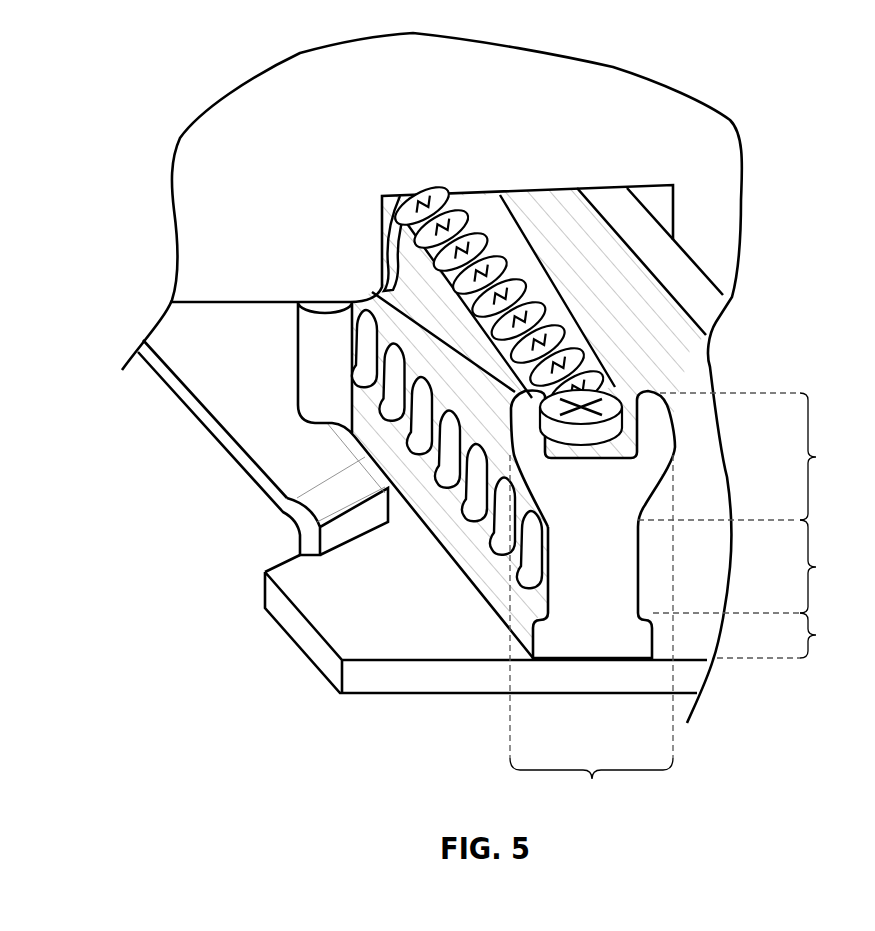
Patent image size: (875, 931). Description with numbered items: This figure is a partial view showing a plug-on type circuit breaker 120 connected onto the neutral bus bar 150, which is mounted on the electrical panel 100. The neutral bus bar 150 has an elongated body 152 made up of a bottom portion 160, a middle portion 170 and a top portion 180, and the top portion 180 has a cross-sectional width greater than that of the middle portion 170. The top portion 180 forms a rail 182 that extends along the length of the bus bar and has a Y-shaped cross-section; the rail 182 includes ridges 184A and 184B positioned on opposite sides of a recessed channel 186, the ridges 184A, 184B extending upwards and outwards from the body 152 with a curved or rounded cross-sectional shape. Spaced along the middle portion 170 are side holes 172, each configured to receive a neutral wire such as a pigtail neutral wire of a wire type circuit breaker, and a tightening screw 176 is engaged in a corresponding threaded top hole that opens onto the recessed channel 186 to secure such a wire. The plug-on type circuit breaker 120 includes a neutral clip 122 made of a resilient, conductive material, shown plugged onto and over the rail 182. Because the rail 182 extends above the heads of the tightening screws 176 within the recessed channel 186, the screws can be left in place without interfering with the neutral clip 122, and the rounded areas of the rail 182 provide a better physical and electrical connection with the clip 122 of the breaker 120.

The electrical panel 100 is at (302, 648).
The plug-on type circuit breaker 120 is at (220, 176).
The neutral clip 122 is at (397, 207).
The neutral bus bar 150 is at (489, 646).
The elongated body 152 is at (634, 557).
The bottom portion 160 is at (788, 635).
The middle portion 170 is at (759, 566).
The side hole 172 is at (429, 445).
The tightening screw 176 is at (578, 383).
The top portion 180 is at (753, 456).
The rail 182 is at (591, 634).
The ridge 184A is at (518, 398).
The ridge 184B is at (652, 393).
The recessed channel 186 is at (553, 303).